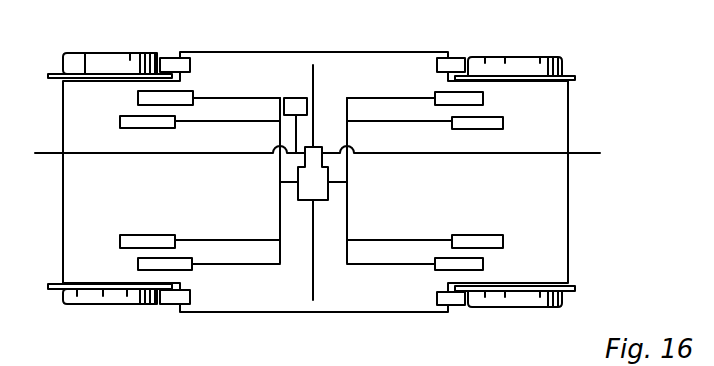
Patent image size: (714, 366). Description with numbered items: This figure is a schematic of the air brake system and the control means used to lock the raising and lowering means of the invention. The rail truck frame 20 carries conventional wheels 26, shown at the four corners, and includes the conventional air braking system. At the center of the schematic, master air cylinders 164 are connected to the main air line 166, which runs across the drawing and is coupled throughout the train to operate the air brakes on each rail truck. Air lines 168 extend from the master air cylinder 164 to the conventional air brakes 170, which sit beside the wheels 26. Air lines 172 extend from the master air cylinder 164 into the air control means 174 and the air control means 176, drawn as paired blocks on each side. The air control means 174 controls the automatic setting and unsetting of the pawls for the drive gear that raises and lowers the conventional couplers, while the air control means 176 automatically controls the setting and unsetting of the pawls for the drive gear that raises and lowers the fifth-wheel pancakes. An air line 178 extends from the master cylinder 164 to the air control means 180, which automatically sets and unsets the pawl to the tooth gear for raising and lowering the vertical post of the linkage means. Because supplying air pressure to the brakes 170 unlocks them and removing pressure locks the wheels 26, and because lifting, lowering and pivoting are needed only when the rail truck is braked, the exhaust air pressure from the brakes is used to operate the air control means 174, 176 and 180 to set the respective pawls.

The rail truck frame 20 is at (338, 53).
The wheels 26 is at (78, 54).
The master air cylinder 164 is at (327, 172).
The main air line 166 is at (437, 158).
The air lines 168 is at (313, 88).
The air brakes 170 is at (162, 61).
The air lines 172 is at (347, 220).
The air control means 174 is at (143, 100).
The air control means 176 is at (125, 121).
The air line 178 is at (296, 135).
The air control means 180 is at (296, 98).